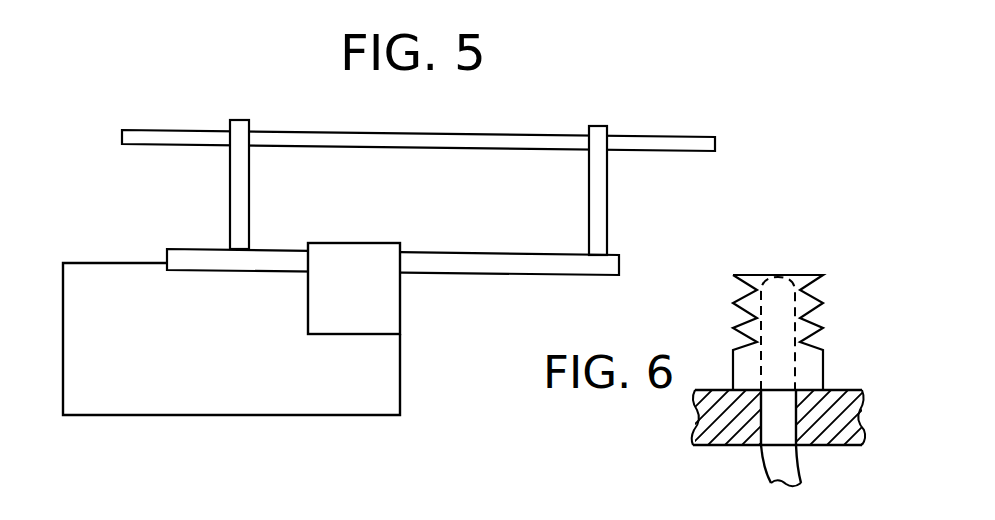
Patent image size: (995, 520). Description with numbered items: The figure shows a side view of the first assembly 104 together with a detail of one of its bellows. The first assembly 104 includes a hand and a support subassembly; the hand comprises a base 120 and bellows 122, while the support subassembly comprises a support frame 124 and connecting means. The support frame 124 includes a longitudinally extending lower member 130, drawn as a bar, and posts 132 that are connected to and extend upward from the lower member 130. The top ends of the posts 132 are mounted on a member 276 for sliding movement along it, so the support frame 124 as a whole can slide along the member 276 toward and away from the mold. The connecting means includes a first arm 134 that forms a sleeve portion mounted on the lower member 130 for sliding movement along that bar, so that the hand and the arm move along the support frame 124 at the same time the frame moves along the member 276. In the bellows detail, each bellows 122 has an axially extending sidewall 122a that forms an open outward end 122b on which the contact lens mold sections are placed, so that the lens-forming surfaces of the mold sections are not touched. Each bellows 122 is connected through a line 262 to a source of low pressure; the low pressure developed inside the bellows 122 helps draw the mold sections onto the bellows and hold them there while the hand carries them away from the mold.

In FIG. 5, the first assembly 104 is at (163, 99).
In FIG. 5, the member 276 is at (407, 137).
In FIG. 5, the posts 132 is at (247, 185).
In FIG. 5, the support frame 124 is at (643, 191).
In FIG. 5, the base 120 is at (128, 278).
In FIG. 6, the base 120 is at (705, 418).
In FIG. 5, the lower member 130 is at (484, 266).
In FIG. 5, the first arm 134 is at (363, 264).
In FIG. 6, the bellows 122 is at (812, 369).
In FIG. 6, the sidewall 122a is at (733, 302).
In FIG. 6, the open outward end 122b is at (780, 277).
In FIG. 6, the line 262 is at (786, 470).